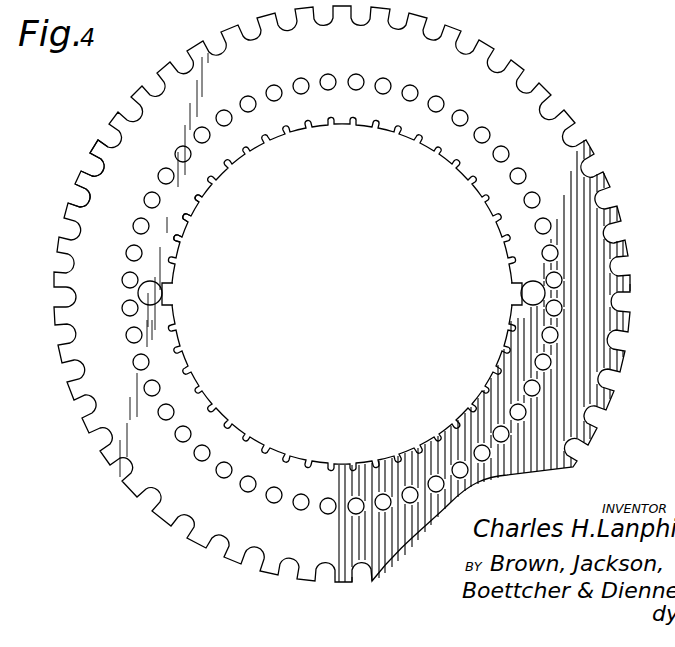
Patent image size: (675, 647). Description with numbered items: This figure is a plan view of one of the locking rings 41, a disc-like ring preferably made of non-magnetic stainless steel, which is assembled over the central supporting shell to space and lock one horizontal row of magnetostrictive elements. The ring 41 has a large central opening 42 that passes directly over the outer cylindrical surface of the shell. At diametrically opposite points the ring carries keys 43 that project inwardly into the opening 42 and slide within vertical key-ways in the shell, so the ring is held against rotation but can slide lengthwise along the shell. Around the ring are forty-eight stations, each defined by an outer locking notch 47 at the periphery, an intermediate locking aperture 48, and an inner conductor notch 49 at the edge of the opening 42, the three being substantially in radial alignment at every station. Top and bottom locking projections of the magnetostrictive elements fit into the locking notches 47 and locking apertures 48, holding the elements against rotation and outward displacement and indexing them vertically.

The locking ring 41 is at (92, 258).
The central opening 42 is at (292, 135).
The key 43 is at (175, 299).
The outer locking notch 47 is at (78, 197).
The intermediate locking aperture 48 is at (137, 222).
The inner conductor notch 49 is at (179, 238).